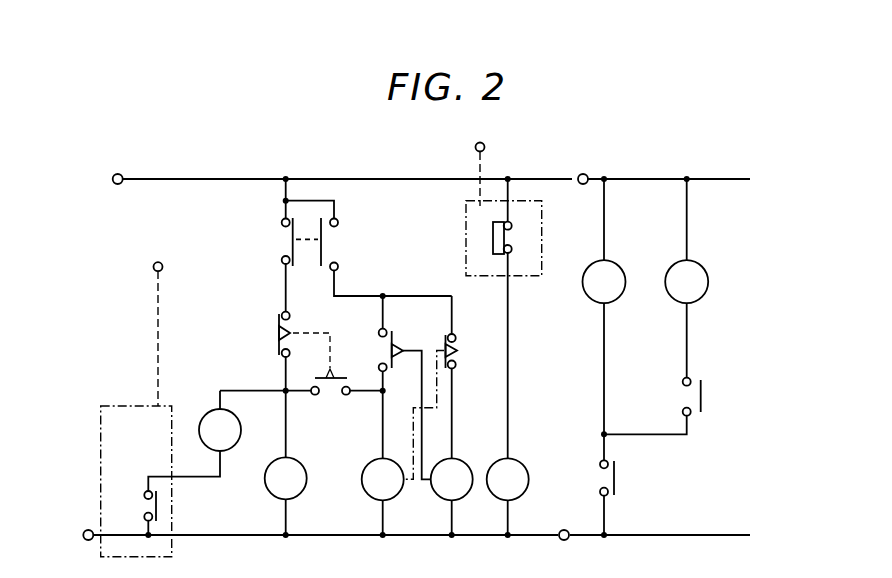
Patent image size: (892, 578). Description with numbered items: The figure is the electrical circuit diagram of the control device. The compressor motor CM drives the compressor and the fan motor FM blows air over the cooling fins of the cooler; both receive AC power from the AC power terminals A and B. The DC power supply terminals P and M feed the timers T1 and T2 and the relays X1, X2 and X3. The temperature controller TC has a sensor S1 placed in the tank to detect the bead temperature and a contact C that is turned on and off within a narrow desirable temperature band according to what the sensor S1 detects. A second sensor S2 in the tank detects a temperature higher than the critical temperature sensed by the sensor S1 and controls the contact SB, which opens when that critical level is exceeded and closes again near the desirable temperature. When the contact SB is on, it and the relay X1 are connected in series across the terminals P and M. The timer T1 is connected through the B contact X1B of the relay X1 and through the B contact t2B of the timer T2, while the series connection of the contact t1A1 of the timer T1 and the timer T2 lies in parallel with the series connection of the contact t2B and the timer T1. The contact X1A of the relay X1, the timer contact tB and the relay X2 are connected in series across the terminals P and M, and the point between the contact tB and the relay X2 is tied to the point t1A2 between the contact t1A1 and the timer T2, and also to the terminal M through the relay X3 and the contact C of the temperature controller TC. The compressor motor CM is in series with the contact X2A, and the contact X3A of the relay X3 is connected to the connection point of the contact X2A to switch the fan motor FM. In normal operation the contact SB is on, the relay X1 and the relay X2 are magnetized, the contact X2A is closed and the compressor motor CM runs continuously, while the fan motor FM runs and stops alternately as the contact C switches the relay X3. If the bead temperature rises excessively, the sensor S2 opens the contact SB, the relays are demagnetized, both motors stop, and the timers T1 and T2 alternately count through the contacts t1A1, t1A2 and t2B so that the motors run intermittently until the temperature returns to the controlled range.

The DC power supply terminal P is at (332, 182).
The DC power supply terminal M is at (318, 550).
The AC power terminal A is at (662, 167).
The AC power terminal B is at (653, 550).
The sensor S1 is at (163, 267).
The sensor S2 is at (496, 171).
The contact SB is at (495, 238).
The contact of relay X1 X1A is at (287, 239).
The B contact of relay X1 X1B is at (326, 239).
The contact of timer T1 tB is at (283, 326).
The contact of timer T1 t1A1 is at (388, 342).
The contact of timer T1 t1A2 is at (333, 378).
The B contact of timer T2 t2B is at (457, 350).
The temperature controller TC is at (136, 468).
The contact C is at (143, 484).
The relay X3 is at (220, 430).
The relay X2 is at (286, 478).
The timer T2 is at (383, 479).
The timer T1 is at (452, 479).
The relay X1 is at (508, 479).
The compressor motor CM is at (604, 281).
The fan motor FM is at (686, 281).
The contact of relay X3 X3A is at (701, 396).
The contact of relay X2 X2A is at (614, 482).